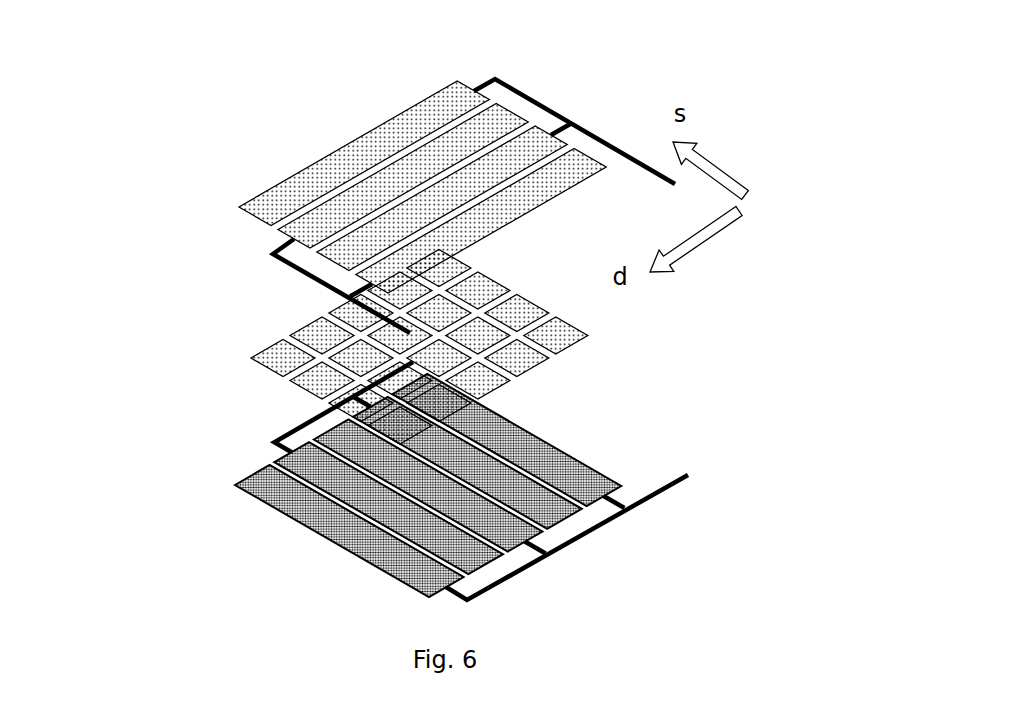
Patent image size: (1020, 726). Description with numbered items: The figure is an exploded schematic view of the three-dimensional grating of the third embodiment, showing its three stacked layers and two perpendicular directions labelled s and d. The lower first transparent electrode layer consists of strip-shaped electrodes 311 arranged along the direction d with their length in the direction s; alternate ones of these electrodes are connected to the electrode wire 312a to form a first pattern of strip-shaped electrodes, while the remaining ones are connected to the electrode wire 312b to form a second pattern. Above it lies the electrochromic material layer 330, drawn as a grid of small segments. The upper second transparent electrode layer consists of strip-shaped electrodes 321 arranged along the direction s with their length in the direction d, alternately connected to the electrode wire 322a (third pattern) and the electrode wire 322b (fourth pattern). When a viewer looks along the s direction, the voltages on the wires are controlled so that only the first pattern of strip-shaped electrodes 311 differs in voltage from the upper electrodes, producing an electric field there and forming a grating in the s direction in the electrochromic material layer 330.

The strip-shaped electrodes 311 is at (340, 547).
The electrode wire 312a is at (587, 537).
The electrode wire 312b is at (275, 442).
The strip-shaped electrodes 321 is at (360, 157).
The electrode wire 322a is at (295, 270).
The electrode wire 322b is at (543, 103).
The electrochromic material layer 330 is at (517, 378).